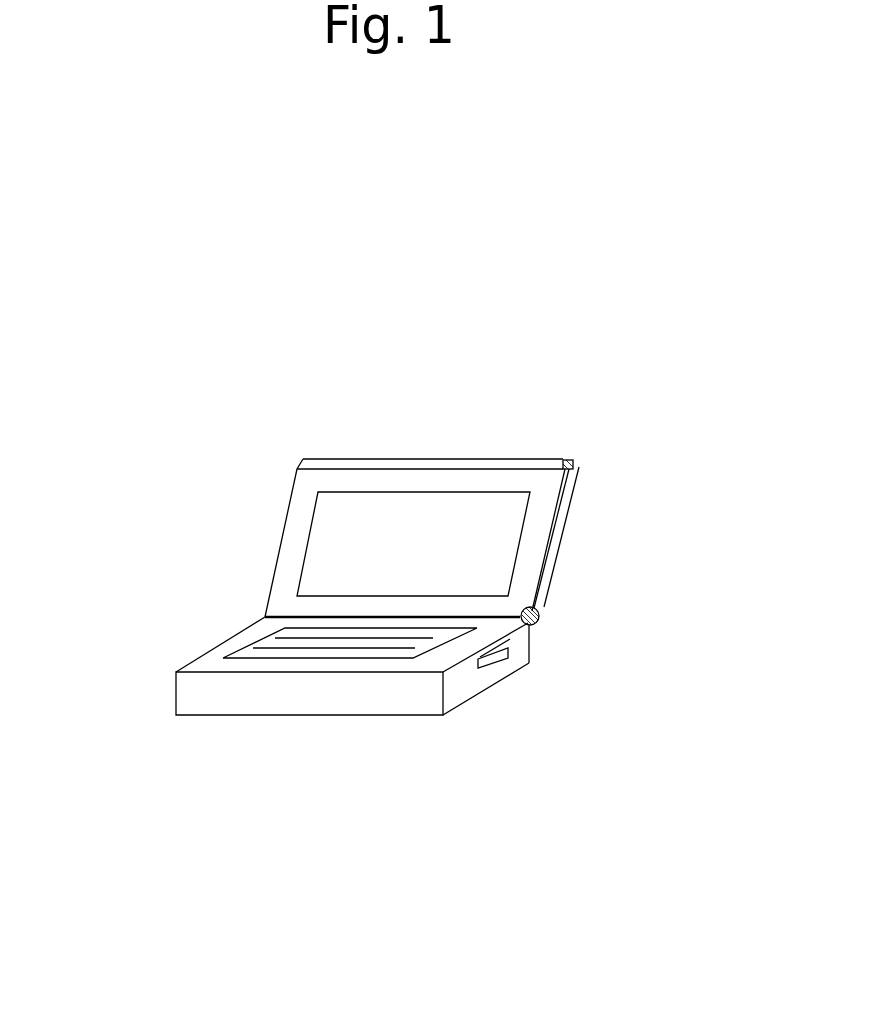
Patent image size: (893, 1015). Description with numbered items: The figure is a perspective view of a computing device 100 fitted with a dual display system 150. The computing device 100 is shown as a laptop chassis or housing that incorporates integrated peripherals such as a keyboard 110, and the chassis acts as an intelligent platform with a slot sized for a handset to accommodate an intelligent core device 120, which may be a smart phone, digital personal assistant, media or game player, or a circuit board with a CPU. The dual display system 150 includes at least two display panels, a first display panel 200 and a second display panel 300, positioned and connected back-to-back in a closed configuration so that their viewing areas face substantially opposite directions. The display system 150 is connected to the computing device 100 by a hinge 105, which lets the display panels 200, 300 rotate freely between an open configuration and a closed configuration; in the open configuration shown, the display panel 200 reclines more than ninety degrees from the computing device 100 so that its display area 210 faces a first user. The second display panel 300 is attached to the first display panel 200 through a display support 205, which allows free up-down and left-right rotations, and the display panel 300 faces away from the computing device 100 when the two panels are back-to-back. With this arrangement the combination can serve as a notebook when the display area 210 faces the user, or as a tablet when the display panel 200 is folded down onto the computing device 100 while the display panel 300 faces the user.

The computing device 100 is at (333, 722).
The hinge 105 is at (537, 622).
The keyboard 110 is at (242, 647).
The intelligent core device 120 is at (495, 657).
The dual display system 150 is at (288, 524).
The display panel 200 is at (465, 478).
The display support 205 is at (573, 461).
The display area 210 is at (355, 497).
The display panel 300 is at (566, 546).